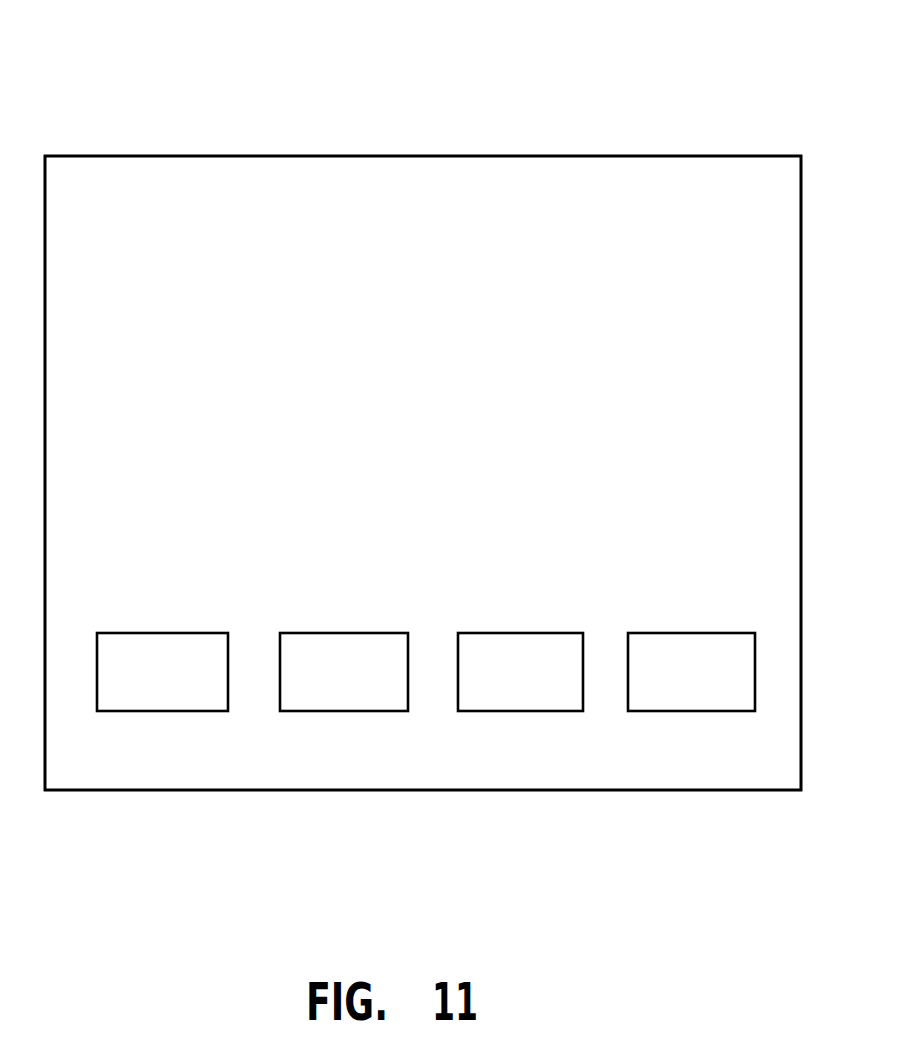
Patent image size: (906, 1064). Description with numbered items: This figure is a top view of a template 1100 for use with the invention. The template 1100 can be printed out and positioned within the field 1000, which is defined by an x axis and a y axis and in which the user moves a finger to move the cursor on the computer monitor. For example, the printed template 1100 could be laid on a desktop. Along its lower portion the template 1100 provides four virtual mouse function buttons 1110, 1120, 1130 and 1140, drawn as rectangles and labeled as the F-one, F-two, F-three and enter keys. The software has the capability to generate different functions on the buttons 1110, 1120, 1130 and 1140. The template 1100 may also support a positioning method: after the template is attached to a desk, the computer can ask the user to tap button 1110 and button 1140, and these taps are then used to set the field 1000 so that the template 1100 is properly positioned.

The template 1100 is at (509, 76).
The field 1000 is at (590, 215).
The virtual mouse function button 1110 is at (190, 690).
The virtual mouse function button 1120 is at (343, 697).
The virtual mouse function button 1130 is at (522, 705).
The virtual mouse function button 1140 is at (678, 708).